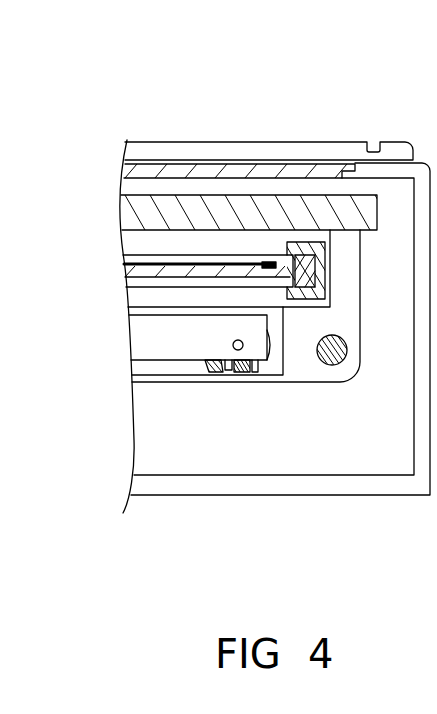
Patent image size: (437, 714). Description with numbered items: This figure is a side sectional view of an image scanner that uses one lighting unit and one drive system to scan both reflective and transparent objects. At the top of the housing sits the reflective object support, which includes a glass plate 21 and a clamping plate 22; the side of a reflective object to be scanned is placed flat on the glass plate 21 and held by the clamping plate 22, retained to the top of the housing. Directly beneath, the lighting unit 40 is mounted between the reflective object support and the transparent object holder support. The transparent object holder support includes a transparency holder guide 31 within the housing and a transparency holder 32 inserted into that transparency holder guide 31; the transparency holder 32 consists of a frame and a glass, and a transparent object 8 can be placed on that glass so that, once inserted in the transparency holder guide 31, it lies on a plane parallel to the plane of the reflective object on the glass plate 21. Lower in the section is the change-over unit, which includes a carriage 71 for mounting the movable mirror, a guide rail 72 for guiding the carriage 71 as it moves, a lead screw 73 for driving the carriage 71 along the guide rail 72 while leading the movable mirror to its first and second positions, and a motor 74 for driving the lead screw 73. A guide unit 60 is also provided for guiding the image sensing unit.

The transparent object 8 is at (131, 255).
The glass plate 21 is at (207, 152).
The clamping plate 22 is at (318, 147).
The transparency holder guide 31 is at (330, 266).
The transparency holder 32 is at (140, 280).
The lighting unit 40 is at (130, 203).
The guide unit 60 is at (340, 366).
The carriage 71 is at (128, 347).
The guide rail 72 is at (246, 375).
The lead screw 73 is at (233, 343).
The motor 74 is at (213, 373).